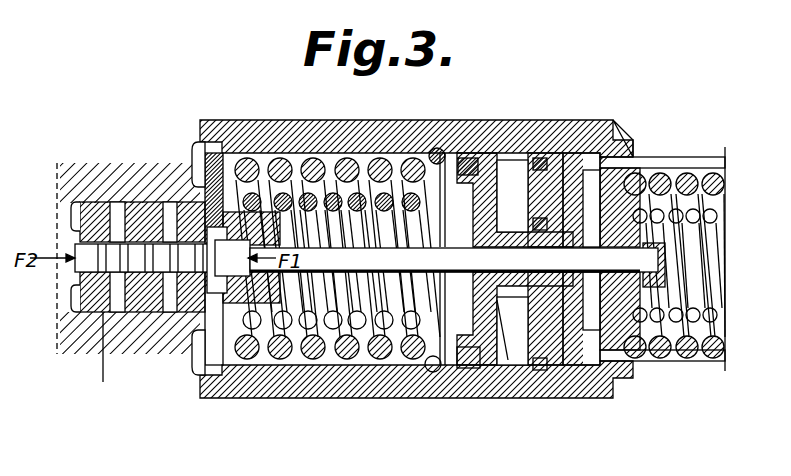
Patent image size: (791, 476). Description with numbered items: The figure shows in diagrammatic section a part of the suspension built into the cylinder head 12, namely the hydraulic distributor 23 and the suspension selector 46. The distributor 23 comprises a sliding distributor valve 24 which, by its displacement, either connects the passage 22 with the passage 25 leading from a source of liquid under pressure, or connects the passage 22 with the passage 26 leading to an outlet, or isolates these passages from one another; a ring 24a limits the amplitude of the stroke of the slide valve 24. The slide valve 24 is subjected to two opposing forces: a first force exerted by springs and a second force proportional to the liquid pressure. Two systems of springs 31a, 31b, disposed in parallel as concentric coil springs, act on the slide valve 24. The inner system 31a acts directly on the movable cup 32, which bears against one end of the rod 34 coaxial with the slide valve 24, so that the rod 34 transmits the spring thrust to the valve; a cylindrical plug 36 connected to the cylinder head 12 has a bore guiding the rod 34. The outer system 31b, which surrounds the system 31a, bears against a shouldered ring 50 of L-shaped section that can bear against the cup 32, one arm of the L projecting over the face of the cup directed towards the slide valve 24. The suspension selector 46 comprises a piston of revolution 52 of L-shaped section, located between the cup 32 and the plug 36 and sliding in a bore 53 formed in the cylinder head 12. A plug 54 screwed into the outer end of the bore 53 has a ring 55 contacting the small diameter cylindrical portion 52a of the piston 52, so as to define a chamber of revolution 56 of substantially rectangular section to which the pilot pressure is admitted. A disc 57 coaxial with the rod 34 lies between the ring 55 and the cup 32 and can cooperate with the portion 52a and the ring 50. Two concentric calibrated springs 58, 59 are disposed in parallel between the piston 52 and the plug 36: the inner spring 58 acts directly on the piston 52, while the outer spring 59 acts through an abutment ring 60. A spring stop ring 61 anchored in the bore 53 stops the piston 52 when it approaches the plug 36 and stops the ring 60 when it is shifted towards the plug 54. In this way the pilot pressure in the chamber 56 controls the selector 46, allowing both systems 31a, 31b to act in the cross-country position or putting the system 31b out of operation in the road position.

The cylinder head 12 is at (253, 140).
The passage 22 is at (141, 300).
The hydraulic distributor 23 is at (96, 362).
The distributor slide valve 24 is at (92, 312).
The ring 24a is at (190, 335).
The passage 25 is at (117, 220).
The passage 26 is at (166, 220).
The system of springs 31a is at (707, 364).
The system of springs 31b is at (692, 175).
The movable cup 32 is at (660, 264).
The rod 34 is at (315, 360).
The plug 36 is at (257, 303).
The suspension selector 46 is at (402, 363).
The shouldered ring 50 is at (592, 177).
The piston of revolution 52 is at (483, 177).
The small diameter cylindrical portion 52a is at (477, 370).
The bore 53 is at (510, 167).
The plug 54 is at (627, 143).
The ring 55 is at (544, 371).
The chamber of revolution 56 is at (503, 340).
The disc 57 is at (617, 388).
The inner spring 58 is at (345, 165).
The outer spring 59 is at (312, 157).
The abutment ring 60 is at (426, 372).
The spring stop ring 61 is at (437, 148).